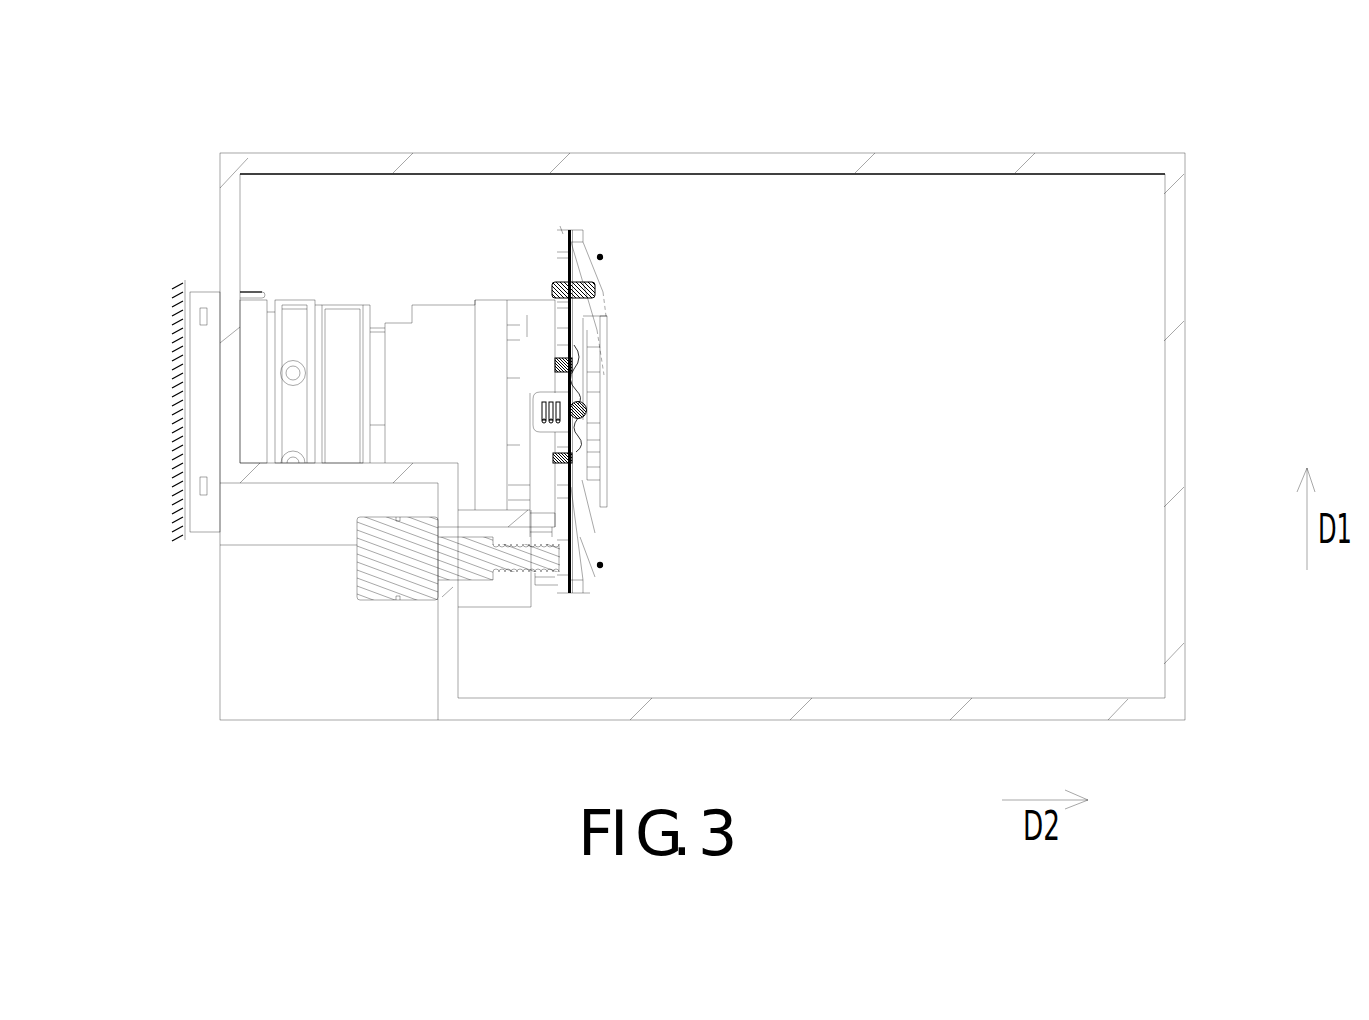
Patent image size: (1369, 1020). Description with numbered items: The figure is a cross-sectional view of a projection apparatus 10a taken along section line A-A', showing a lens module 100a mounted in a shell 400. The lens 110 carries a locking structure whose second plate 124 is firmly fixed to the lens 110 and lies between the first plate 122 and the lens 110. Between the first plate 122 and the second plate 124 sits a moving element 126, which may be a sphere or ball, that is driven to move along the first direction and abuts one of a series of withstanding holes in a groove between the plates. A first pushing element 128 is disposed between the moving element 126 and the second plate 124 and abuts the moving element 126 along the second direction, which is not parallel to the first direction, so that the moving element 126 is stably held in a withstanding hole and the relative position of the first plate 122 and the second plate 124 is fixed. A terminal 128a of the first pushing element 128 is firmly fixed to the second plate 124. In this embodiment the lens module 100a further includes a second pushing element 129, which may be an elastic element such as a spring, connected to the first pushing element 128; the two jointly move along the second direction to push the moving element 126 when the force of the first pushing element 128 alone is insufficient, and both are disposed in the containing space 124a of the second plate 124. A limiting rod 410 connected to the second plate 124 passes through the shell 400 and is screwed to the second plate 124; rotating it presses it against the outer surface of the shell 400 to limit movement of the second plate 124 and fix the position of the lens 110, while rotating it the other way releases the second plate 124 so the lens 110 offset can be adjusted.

The projection apparatus 10a is at (107, 143).
The lens module 100a is at (391, 61).
The lens 110 is at (423, 353).
The first plate 122 is at (590, 250).
The second plate 124 is at (562, 229).
The containing space 124a is at (545, 430).
The moving element 126 is at (590, 405).
The first pushing element 128 is at (580, 375).
The terminal 128a is at (600, 338).
The second pushing element 129 is at (545, 425).
The shell 400 is at (500, 698).
The limiting rod 410 is at (385, 595).